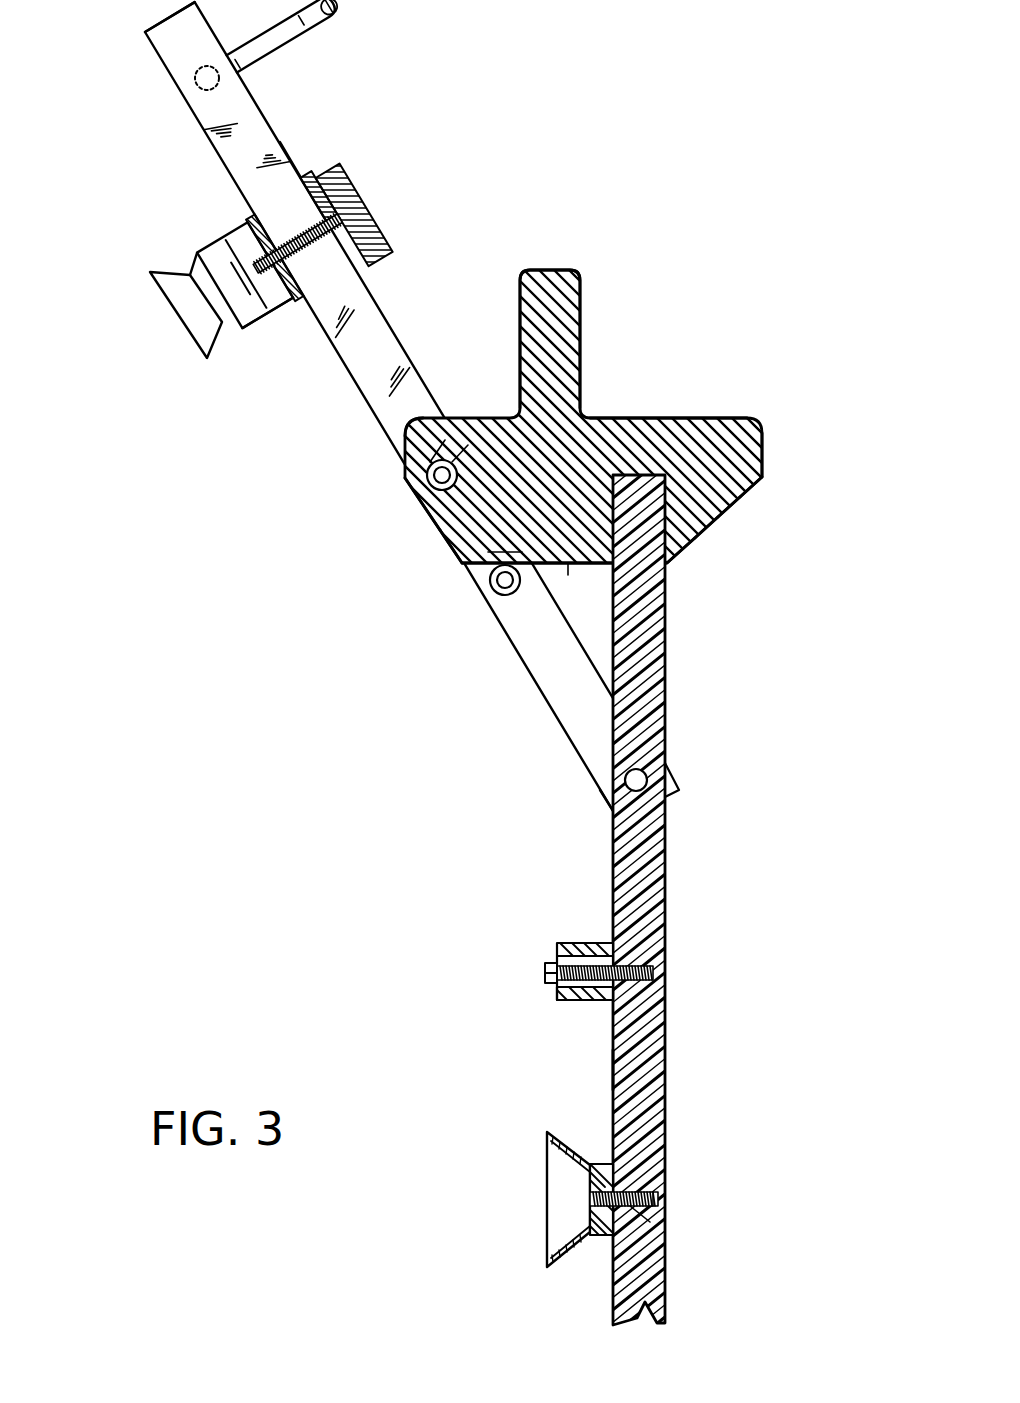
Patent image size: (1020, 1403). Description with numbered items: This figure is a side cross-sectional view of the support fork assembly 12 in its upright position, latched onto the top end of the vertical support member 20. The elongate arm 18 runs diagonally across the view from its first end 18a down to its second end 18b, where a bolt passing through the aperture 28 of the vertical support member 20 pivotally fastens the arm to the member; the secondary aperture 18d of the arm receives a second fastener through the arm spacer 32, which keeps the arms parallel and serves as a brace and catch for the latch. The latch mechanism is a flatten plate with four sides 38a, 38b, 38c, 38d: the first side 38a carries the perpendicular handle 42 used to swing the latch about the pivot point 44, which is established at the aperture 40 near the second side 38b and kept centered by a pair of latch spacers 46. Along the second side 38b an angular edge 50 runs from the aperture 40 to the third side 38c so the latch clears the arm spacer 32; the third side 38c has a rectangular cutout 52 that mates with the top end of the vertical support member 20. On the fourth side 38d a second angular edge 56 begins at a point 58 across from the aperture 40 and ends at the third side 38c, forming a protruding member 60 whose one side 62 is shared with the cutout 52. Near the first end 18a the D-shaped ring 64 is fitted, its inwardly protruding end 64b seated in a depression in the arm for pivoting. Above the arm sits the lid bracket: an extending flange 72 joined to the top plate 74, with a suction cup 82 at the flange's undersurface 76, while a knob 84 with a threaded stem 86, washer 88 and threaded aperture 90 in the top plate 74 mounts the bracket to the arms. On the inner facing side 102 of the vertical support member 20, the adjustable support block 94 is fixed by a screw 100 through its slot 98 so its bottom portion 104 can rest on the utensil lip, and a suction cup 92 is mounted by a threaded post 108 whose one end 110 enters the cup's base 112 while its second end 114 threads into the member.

The support fork assembly 12 is at (290, 160).
The elongate arm 18 is at (235, 180).
The first end of elongate arm 18a is at (152, 42).
The second end of elongate arm 18b is at (606, 812).
The secondary aperture 18d is at (490, 587).
The vertical support member 20 is at (667, 668).
The aperture of vertical support member 28 is at (641, 771).
The arm spacer 32 is at (497, 600).
The first side of flatten plate 38a is at (690, 418).
The second side of flatten plate 38b is at (407, 438).
The third side of flatten plate 38c is at (610, 607).
The fourth side of flatten plate 38d is at (762, 450).
The aperture of latch mechanism 40 is at (450, 458).
The handle 42 is at (545, 268).
The pivot point 44 is at (465, 450).
The latch spacer 46 is at (458, 532).
The angular edge 50 is at (438, 497).
The cutout 52 is at (568, 565).
The second angular edge 56 is at (740, 493).
The point 58 is at (760, 477).
The protruding member 60 is at (718, 515).
The side of protruding member 62 is at (690, 537).
The D-shaped ring 64 is at (293, 42).
The inwardly protruding end of D-shaped ring 64b is at (200, 86).
The extending flange 72 is at (197, 253).
The top plate 74 is at (303, 297).
The undersurface of extending flange 76 is at (237, 328).
The suction cup 82 is at (193, 343).
The knob 84 is at (365, 195).
The threaded stem 86 is at (305, 255).
The washer 88 is at (363, 280).
The threaded aperture of top plate 90 is at (280, 270).
The suction cup 92 is at (547, 1168).
The adjustable support block 94 is at (580, 943).
The slot 98 is at (562, 982).
The screw 100 is at (553, 970).
The inner facing side 102 is at (614, 1070).
The bottom portion of support block 104 is at (588, 1000).
The threaded post 108 is at (647, 1210).
The one end of threaded post 110 is at (590, 1198).
The base of suction cup 112 is at (602, 1238).
The second end of threaded post 114 is at (660, 1198).